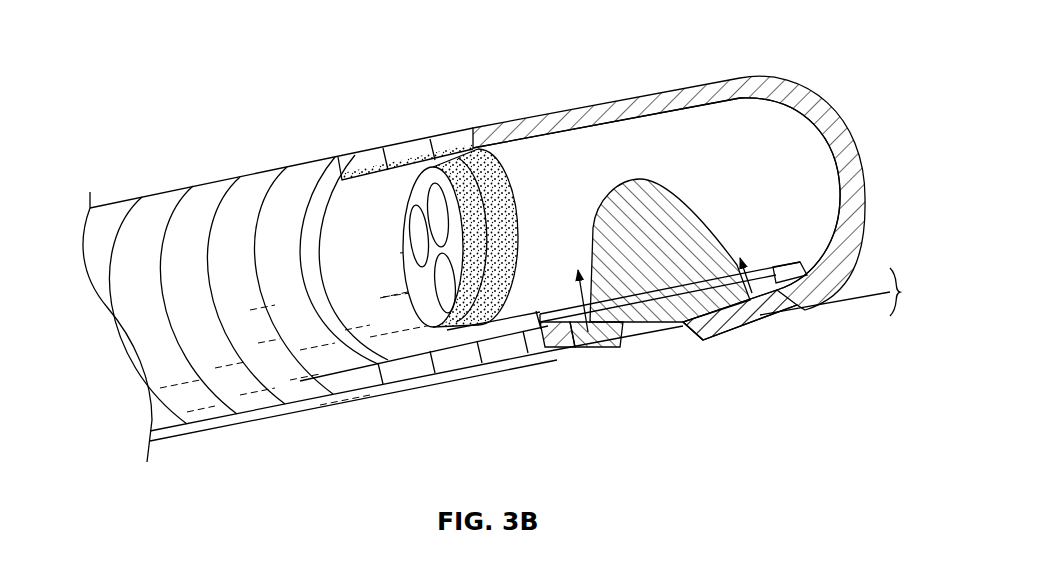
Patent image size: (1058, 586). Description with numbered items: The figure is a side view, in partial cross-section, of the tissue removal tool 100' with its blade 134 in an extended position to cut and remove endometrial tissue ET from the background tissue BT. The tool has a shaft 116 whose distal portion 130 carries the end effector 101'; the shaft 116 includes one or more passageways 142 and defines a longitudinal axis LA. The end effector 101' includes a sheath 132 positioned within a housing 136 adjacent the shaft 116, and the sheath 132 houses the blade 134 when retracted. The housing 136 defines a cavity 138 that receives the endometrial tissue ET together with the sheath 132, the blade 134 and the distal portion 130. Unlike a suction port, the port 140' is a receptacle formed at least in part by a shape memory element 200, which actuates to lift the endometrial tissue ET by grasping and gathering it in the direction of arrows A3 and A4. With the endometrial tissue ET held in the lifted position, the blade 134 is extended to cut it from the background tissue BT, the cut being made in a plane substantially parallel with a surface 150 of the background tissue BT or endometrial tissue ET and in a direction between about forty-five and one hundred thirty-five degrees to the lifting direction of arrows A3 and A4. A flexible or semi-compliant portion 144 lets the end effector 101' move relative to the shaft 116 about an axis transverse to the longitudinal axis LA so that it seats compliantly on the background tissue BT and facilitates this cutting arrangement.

The tissue removal tool 100' is at (793, 38).
The end effector 101' is at (97, 327).
The shaft 116 is at (366, 160).
The distal portion 130 is at (385, 166).
The sheath 132 is at (562, 304).
The blade 134 is at (786, 288).
The housing 136 is at (800, 86).
The cavity 138 is at (805, 144).
The port 140' is at (705, 356).
The passageways 142 is at (434, 176).
The flexible or semi-compliant portion 144 is at (211, 198).
The surface 150 is at (352, 403).
The shape memory element 200 is at (578, 348).
The longitudinal axis LA is at (482, 236).
The endometrial tissue ET is at (663, 186).
The background tissue BT is at (675, 416).
The arrow A3 is at (547, 338).
The arrow A4 is at (750, 270).